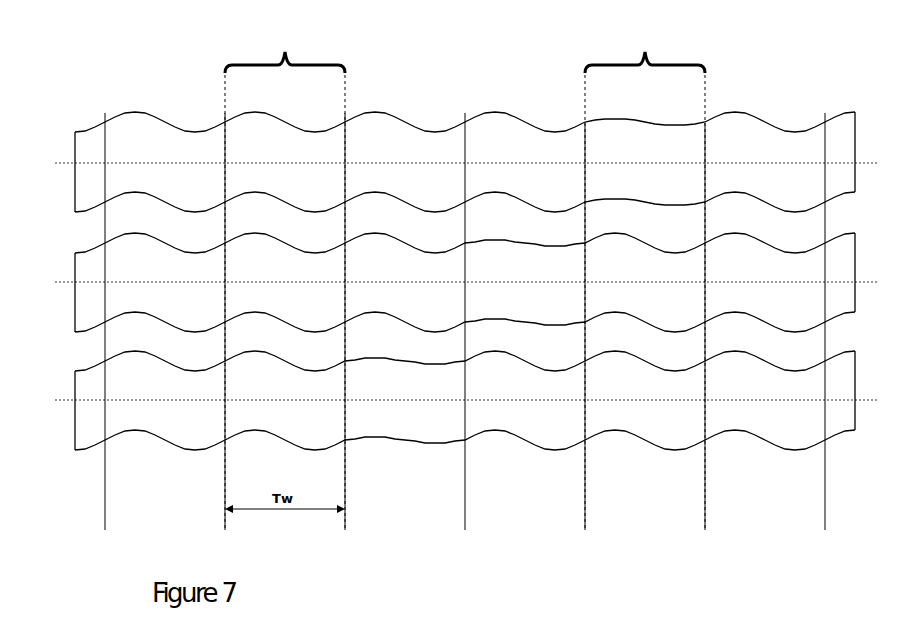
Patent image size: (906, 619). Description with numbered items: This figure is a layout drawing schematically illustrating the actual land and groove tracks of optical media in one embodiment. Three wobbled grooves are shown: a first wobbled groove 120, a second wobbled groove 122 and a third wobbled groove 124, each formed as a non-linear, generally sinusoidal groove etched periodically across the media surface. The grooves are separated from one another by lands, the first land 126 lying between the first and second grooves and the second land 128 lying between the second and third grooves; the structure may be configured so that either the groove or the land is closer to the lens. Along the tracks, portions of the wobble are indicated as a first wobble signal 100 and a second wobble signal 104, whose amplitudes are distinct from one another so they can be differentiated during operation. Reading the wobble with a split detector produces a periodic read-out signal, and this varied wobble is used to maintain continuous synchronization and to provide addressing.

The first wobble signal 100 is at (285, 277).
The second wobble signal 104 is at (645, 277).
The first wobbled groove 120 is at (93, 150).
The second wobbled groove 122 is at (95, 270).
The third wobbled groove 124 is at (93, 432).
The first land 126 is at (271, 221).
The second land 128 is at (271, 341).